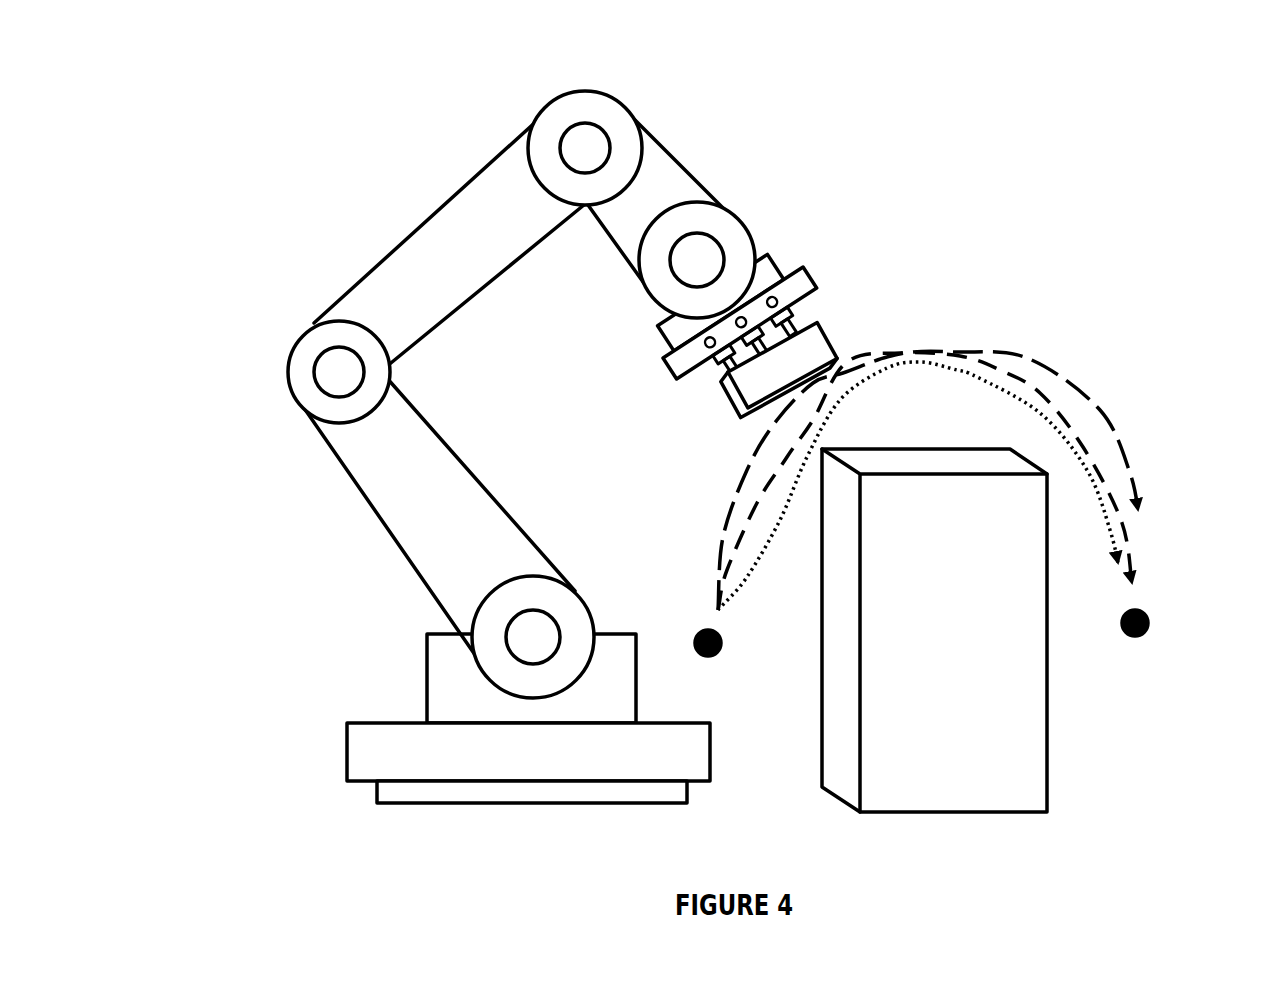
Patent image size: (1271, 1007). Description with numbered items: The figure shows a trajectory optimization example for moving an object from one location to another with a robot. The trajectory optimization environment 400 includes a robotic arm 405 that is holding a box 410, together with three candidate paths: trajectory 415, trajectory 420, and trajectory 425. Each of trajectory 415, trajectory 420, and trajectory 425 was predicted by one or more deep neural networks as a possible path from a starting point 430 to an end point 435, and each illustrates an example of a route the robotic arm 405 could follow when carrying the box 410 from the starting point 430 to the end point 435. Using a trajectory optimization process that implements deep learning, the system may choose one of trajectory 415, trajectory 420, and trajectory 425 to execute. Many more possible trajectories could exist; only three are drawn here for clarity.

The trajectory optimization environment 400 is at (266, 101).
The robotic arm 405 is at (286, 368).
The box 410 is at (715, 388).
The trajectory 415 is at (978, 374).
The trajectory 420 is at (1042, 391).
The trajectory 425 is at (1115, 415).
The starting point 430 is at (727, 646).
The end point 435 is at (1152, 634).